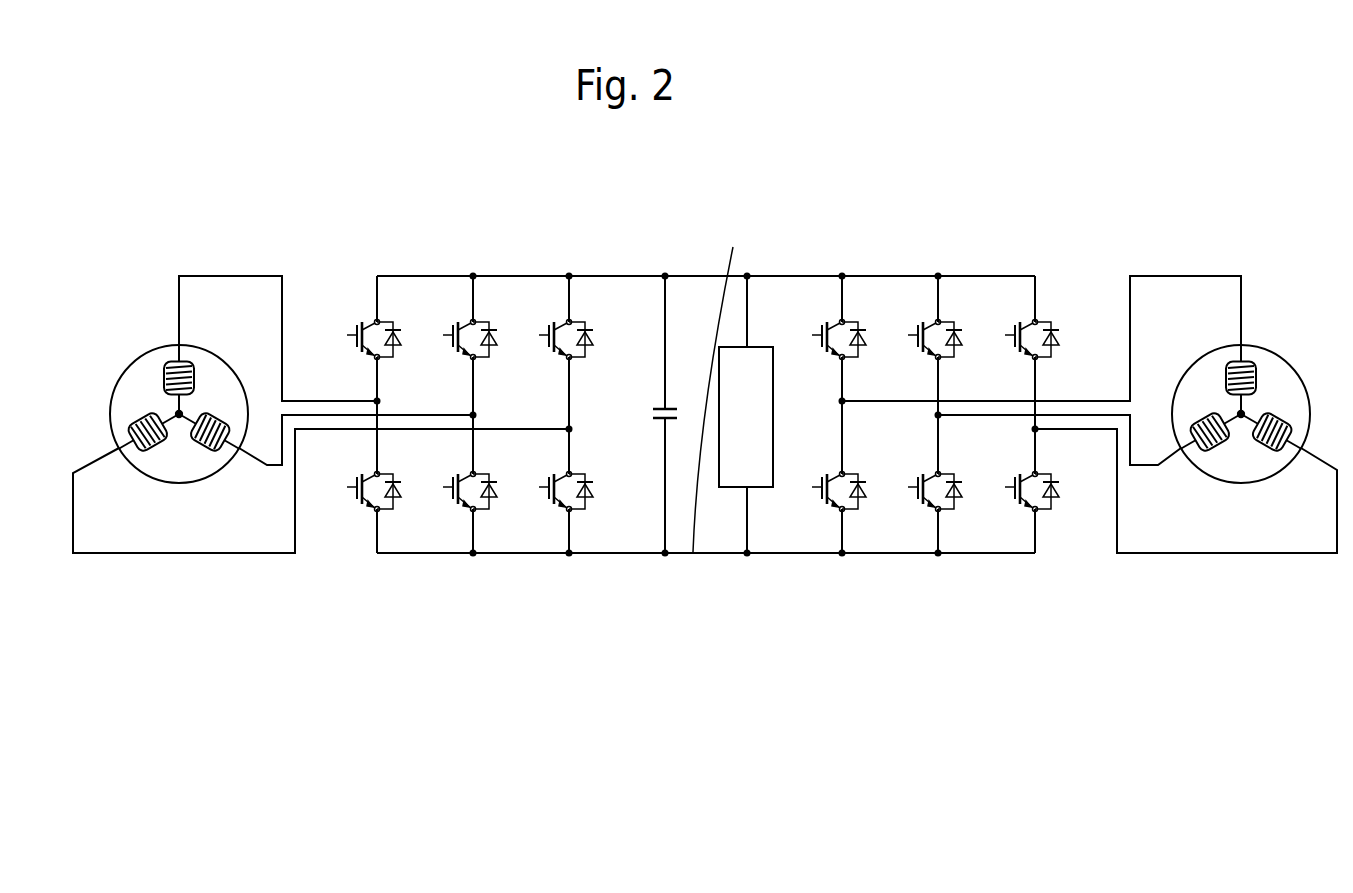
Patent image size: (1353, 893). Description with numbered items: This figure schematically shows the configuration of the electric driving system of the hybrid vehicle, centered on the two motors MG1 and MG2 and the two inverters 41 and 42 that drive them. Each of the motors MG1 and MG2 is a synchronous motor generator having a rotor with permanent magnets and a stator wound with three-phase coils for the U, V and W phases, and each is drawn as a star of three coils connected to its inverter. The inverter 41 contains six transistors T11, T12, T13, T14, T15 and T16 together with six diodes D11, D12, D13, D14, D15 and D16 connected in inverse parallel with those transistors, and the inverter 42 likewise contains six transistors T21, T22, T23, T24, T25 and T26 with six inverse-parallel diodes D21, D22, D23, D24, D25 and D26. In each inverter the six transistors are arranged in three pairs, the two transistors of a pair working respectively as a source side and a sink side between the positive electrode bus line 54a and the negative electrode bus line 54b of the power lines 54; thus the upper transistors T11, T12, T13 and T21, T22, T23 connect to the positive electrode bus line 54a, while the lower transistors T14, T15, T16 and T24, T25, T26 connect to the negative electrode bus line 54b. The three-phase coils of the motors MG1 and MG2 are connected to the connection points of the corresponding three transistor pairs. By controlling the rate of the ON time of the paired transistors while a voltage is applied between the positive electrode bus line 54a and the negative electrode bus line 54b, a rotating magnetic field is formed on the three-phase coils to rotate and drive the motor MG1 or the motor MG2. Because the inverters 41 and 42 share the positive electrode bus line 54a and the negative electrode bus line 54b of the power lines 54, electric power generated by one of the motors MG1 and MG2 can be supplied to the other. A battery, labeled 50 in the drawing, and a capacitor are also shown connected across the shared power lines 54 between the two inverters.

The inverter 41 is at (953, 248).
The inverter 42 is at (488, 247).
The battery 50 is at (760, 343).
The power lines 54 is at (702, 369).
The positive electrode bus line 54a is at (678, 273).
The negative electrode bus line 54b is at (721, 389).
The motor MG1 is at (1282, 358).
The motor MG2 is at (221, 357).
The transistor T11 is at (821, 335).
The transistor T12 is at (917, 335).
The transistor T13 is at (1014, 335).
The transistor T14 is at (821, 487).
The transistor T15 is at (917, 487).
The transistor T16 is at (1014, 487).
The transistor T21 is at (356, 335).
The transistor T22 is at (452, 335).
The transistor T23 is at (548, 335).
The transistor T24 is at (356, 487).
The transistor T25 is at (452, 487).
The transistor T26 is at (548, 487).
The diode D11 is at (864, 351).
The diode D12 is at (960, 351).
The diode D13 is at (1057, 351).
The diode D14 is at (864, 503).
The diode D15 is at (960, 503).
The diode D16 is at (1057, 503).
The diode D21 is at (399, 351).
The diode D22 is at (495, 351).
The diode D23 is at (591, 351).
The diode D24 is at (399, 503).
The diode D25 is at (495, 503).
The diode D26 is at (591, 503).